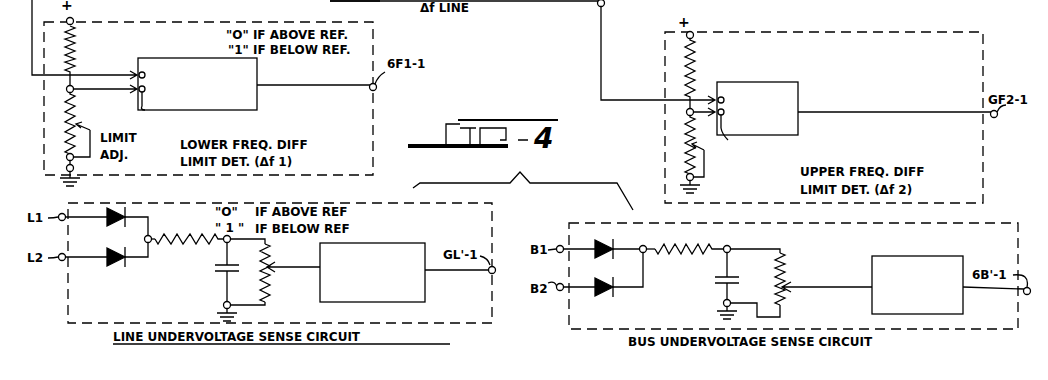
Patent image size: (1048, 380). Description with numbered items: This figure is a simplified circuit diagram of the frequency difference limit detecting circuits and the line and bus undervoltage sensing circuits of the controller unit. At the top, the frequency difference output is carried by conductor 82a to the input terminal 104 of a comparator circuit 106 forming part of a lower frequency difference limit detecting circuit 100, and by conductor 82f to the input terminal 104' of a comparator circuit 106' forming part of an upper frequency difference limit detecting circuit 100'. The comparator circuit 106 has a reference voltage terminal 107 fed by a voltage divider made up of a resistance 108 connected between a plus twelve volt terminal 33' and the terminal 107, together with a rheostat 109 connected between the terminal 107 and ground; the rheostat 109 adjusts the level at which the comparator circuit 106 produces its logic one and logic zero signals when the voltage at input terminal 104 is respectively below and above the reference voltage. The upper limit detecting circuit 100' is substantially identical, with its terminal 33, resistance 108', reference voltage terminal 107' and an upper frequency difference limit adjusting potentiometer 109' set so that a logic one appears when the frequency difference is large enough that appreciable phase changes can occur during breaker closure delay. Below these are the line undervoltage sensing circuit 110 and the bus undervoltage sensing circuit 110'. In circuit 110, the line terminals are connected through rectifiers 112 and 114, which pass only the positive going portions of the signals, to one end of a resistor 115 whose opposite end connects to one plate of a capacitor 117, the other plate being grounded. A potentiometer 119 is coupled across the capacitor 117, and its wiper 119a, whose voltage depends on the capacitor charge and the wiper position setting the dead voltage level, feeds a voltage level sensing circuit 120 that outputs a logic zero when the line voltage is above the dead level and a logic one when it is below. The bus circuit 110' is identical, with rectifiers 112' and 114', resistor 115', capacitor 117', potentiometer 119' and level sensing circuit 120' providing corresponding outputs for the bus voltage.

The plus 12 volts terminal 33 is at (709, 24).
The plus 12 volts terminal 33' is at (89, 12).
The conductor 82a is at (330, 1).
The delta f line branch 82f is at (640, 32).
The lower frequency difference limit detecting circuit 100 is at (188, 98).
The upper frequency difference limit detecting circuit 100' is at (803, 117).
The input terminal 104 is at (197, 71).
The input terminal 104' is at (757, 99).
The comparator circuit 106 is at (278, 59).
The comparator circuit 106' is at (891, 87).
The reference voltage terminal 107 is at (127, 104).
The reference voltage terminal 107' is at (745, 136).
The resistance 108 is at (93, 56).
The resistance 108' is at (712, 73).
The rheostat 109 is at (86, 124).
The upper frequency difference limit adjusting potentiometer 109' is at (666, 146).
The line undervoltage sensing circuit 110 is at (260, 252).
The bus undervoltage sensing circuit 110' is at (793, 265).
The rectifier 112 is at (127, 211).
The rectifier 112' is at (625, 245).
The rectifier 114 is at (121, 271).
The rectifier 114' is at (625, 283).
The resistor 115 is at (189, 227).
The resistor 115' is at (697, 242).
The capacitor 117 is at (204, 271).
The capacitor 117' is at (707, 276).
The potentiometer 119 is at (285, 273).
The wiper 119a is at (272, 266).
The potentiometer 119' is at (823, 279).
The voltage level sensing circuit 120 is at (387, 256).
The voltage level sensing circuit 120' is at (917, 274).